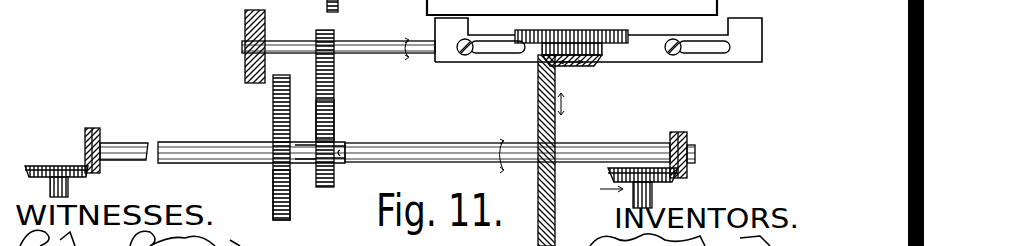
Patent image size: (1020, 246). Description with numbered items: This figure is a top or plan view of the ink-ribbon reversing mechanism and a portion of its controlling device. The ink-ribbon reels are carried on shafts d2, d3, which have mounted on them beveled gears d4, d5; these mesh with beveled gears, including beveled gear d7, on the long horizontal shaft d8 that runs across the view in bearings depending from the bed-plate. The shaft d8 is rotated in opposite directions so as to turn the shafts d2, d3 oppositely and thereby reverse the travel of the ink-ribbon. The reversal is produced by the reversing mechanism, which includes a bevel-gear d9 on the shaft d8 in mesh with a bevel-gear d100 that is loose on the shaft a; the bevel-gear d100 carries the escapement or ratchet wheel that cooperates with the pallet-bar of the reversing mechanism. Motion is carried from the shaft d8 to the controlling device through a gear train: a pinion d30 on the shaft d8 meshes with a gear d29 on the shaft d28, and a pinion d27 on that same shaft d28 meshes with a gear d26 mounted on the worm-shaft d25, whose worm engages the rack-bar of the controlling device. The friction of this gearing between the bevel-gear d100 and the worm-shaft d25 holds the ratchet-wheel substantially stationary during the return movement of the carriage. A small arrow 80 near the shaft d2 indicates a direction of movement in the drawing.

The shaft a is at (572, 7).
The bevel-gear d100 is at (572, 62).
The bevel-gear d9 is at (538, 113).
The worm-shaft d25 is at (298, 40).
The gear d26 is at (334, 57).
The pinion d27 is at (334, 110).
The pinion d30 is at (273, 119).
The gear d29 is at (290, 205).
The shaft d28 is at (342, 165).
The shaft d8 is at (137, 143).
The beveled gear d7 is at (95, 127).
The beveled gear d5 is at (50, 165).
The shaft d3 is at (68, 188).
The beveled gear d4 is at (625, 180).
The shaft d2 is at (652, 196).
The direction arrow 80 is at (610, 197).